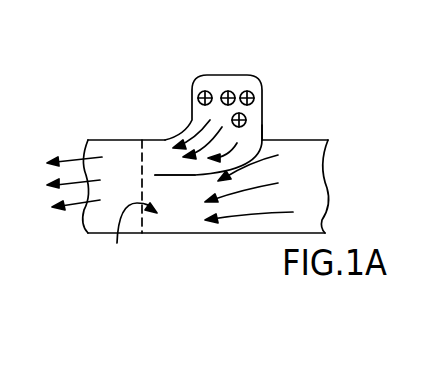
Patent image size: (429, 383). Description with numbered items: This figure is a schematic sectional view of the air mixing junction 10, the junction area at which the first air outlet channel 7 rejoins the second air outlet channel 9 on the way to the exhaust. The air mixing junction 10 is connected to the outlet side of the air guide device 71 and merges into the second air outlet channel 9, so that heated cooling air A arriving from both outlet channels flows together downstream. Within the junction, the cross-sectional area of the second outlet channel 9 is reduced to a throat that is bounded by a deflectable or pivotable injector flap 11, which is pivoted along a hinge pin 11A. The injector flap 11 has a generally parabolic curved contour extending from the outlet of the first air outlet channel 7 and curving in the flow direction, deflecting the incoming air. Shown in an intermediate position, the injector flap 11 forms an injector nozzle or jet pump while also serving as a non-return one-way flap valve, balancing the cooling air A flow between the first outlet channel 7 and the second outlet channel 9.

The first air outlet channel 7 is at (224, 75).
The air guide device 71 is at (276, 83).
The hinge pin 11A is at (266, 137).
The second air outlet channel 9 is at (263, 225).
The air mixing junction 10 is at (128, 212).
The injector flap 11 is at (182, 175).
The cooling air A is at (343, 197).